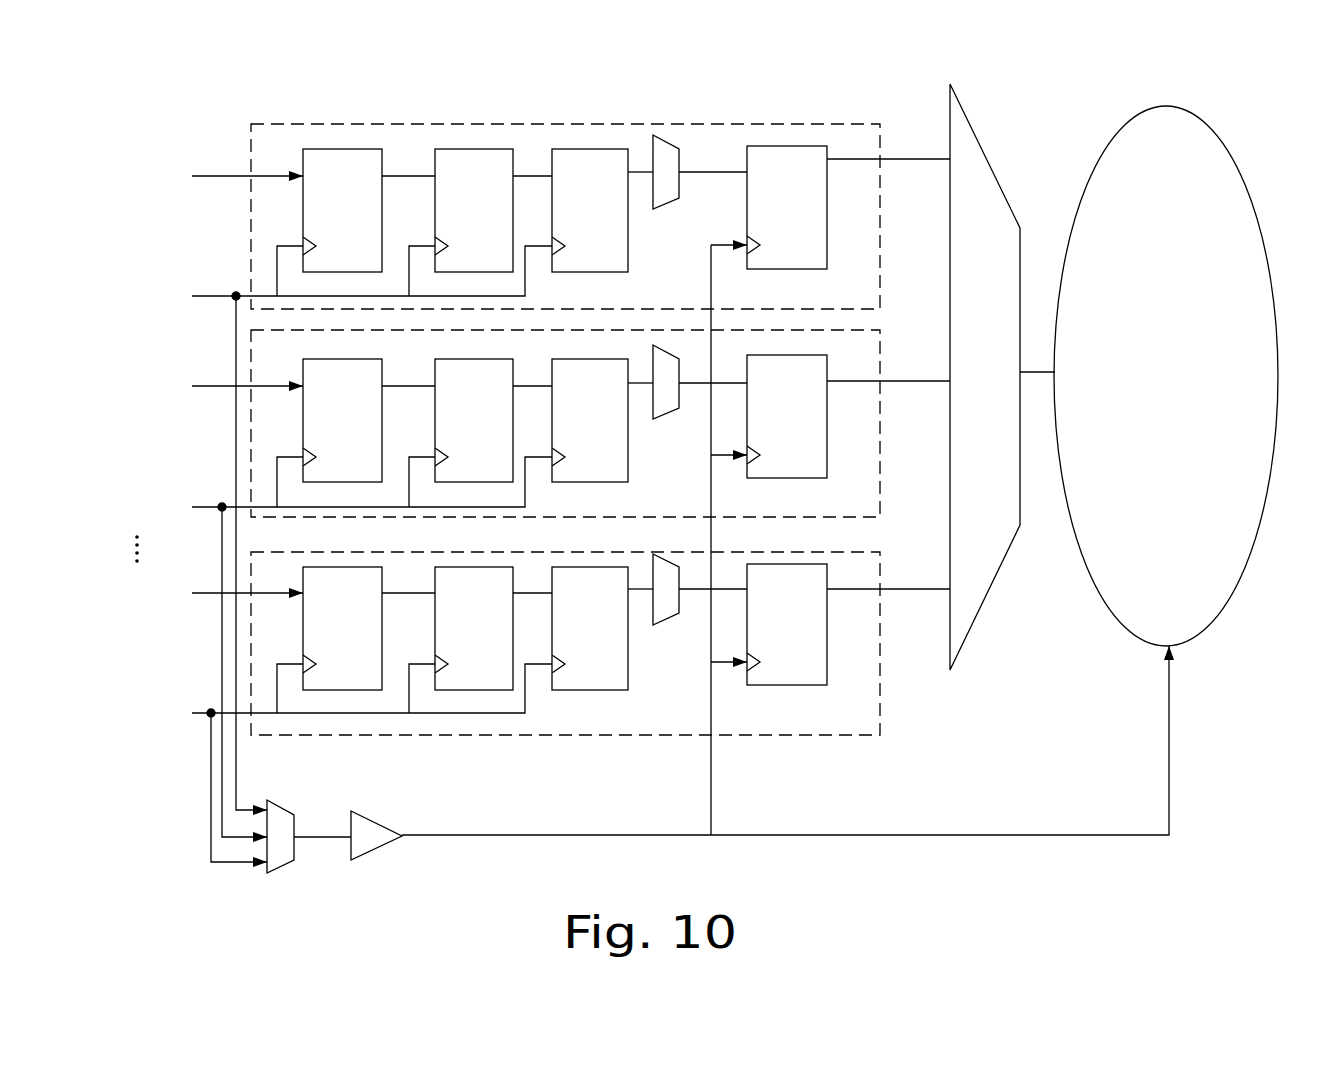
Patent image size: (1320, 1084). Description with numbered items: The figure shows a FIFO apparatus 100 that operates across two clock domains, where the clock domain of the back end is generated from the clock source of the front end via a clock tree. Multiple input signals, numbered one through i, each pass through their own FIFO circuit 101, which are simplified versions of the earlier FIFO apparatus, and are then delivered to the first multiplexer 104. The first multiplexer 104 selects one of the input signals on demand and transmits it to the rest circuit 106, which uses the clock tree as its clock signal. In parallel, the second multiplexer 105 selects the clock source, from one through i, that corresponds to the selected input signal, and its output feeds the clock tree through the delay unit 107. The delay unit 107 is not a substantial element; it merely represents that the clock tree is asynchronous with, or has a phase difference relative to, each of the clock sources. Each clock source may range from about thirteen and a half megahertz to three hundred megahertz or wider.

The FIFO apparatus 100 is at (1072, 101).
The FIFO circuit 101 is at (712, 123).
The first multiplexer 104 is at (1000, 575).
The second multiplexer 105 is at (283, 803).
The rest circuit 106 is at (1223, 610).
The delay unit 107 is at (380, 847).